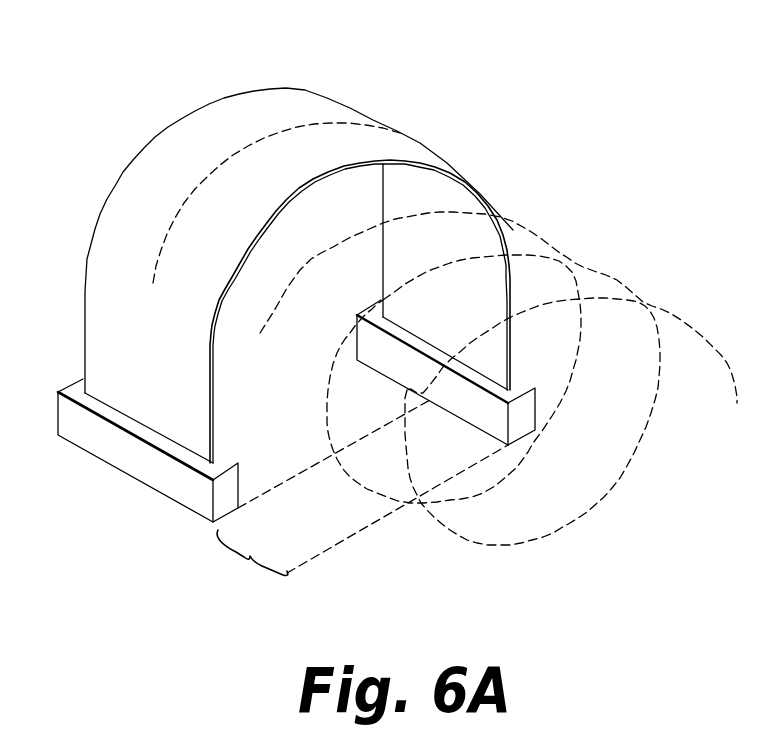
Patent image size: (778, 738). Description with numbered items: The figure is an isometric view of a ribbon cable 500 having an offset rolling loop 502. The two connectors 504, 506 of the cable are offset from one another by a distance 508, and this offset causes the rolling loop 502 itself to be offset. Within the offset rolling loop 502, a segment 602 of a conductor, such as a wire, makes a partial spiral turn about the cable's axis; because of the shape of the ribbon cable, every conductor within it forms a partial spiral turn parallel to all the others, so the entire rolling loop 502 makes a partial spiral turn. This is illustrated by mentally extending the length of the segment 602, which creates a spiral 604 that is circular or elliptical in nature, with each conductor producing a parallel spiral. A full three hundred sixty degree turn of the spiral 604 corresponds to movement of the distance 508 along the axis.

The ribbon cable 500 is at (150, 63).
The offset rolling loop 502 is at (417, 137).
The connector 504 is at (529, 418).
The connector 506 is at (136, 466).
The distance 508 is at (356, 501).
The segment of a conductor 602 is at (320, 125).
The spiral 604 is at (617, 278).